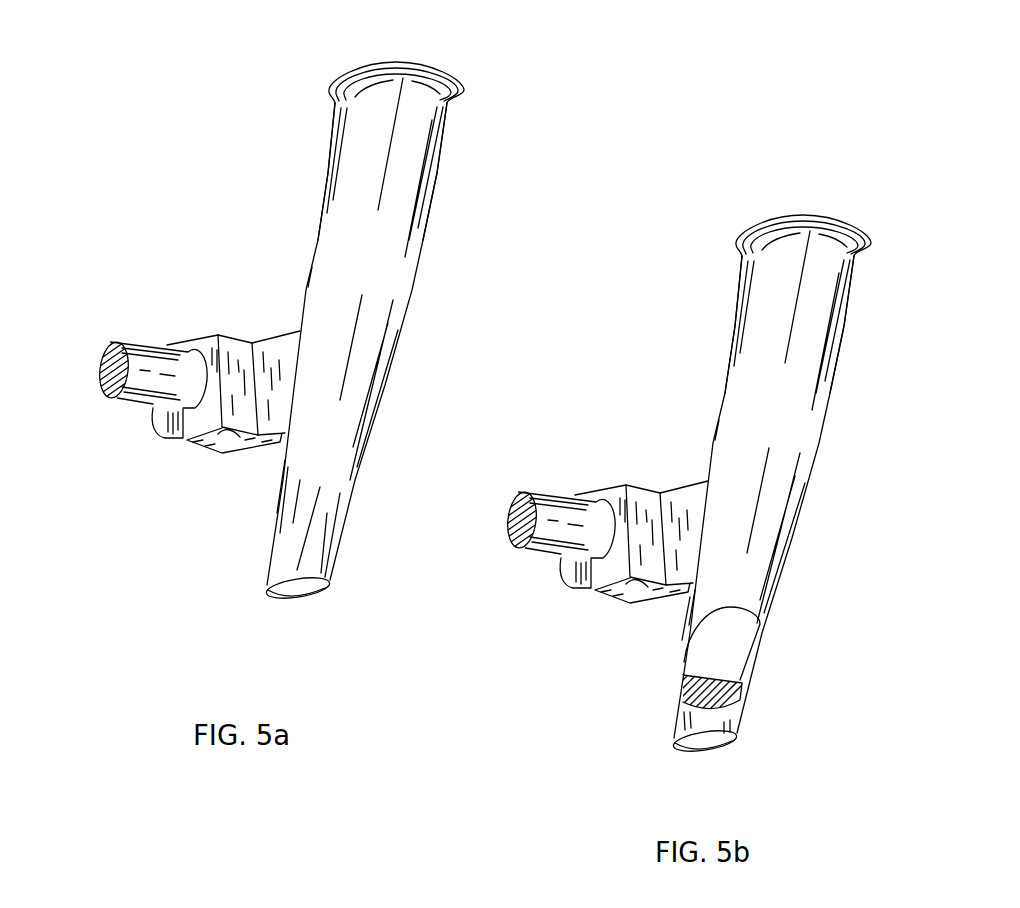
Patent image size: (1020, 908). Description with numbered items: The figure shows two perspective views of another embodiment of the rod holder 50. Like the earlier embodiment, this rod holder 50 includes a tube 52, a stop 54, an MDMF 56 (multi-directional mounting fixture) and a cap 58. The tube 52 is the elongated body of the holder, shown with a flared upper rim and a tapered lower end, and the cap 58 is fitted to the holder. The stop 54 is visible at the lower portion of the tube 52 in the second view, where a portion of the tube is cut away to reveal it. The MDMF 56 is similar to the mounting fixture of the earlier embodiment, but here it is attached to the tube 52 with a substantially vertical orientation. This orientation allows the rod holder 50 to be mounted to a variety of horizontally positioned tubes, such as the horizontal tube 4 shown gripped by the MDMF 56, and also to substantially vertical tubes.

In FIG. 5a, the tube 4 is at (110, 342).
In FIG. 5b, the tube 4 is at (531, 519).
In FIG. 5a, the rod holder 50 is at (477, 98).
In FIG. 5b, the rod holder 50 is at (768, 200).
In FIG. 5a, the tube 52 is at (463, 158).
In FIG. 5b, the tube 52 is at (697, 260).
In FIG. 5b, the stop 54 is at (747, 707).
In FIG. 5a, the MDMF 56 is at (203, 345).
In FIG. 5b, the MDMF 56 is at (613, 518).
In FIG. 5a, the cap 58 is at (167, 433).
In FIG. 5b, the cap 58 is at (530, 584).